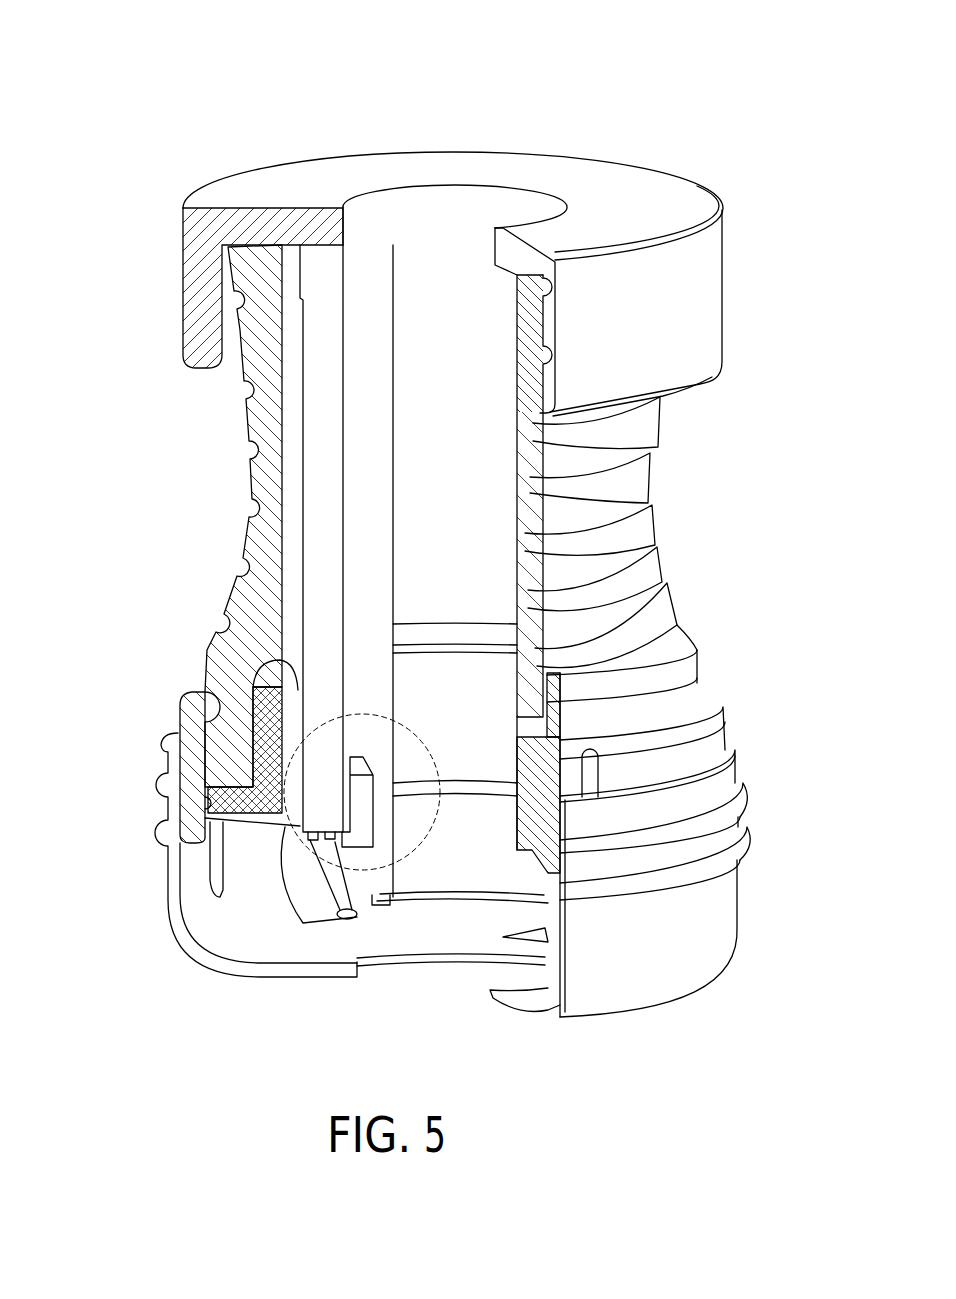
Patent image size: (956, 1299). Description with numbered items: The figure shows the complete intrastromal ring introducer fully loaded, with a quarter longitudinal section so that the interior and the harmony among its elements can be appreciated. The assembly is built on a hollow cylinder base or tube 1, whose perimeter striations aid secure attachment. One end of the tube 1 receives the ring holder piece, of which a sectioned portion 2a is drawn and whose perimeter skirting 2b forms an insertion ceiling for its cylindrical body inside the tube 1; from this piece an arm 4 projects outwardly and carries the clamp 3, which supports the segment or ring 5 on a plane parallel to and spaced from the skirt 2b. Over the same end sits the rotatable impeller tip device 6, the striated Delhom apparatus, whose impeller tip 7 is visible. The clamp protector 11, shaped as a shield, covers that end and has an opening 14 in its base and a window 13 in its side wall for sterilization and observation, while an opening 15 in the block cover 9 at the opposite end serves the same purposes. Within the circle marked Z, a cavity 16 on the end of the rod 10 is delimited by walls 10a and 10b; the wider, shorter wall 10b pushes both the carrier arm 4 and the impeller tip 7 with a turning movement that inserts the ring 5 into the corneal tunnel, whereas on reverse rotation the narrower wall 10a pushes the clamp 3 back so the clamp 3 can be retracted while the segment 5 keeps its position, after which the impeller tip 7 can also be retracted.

The cylinder base or tube 1 is at (610, 572).
The seal element 2a is at (265, 738).
The perimeter skirting 2b is at (167, 843).
The clamp 3 is at (477, 900).
The arm 4 is at (377, 912).
The segment or ring 5 is at (505, 898).
The rotatable impeller tip device 6 is at (187, 793).
The impeller tip 7 is at (337, 915).
The block cover 9 is at (700, 350).
The rod 10 is at (320, 532).
The wall 10a is at (400, 878).
The delimiting wall 10b is at (262, 858).
The clamp protector 11 is at (262, 887).
The window 13 is at (285, 905).
The opening 14 is at (373, 967).
The opening 15 is at (477, 197).
The cavity 16 is at (400, 733).
The blocked zone Z is at (312, 880).